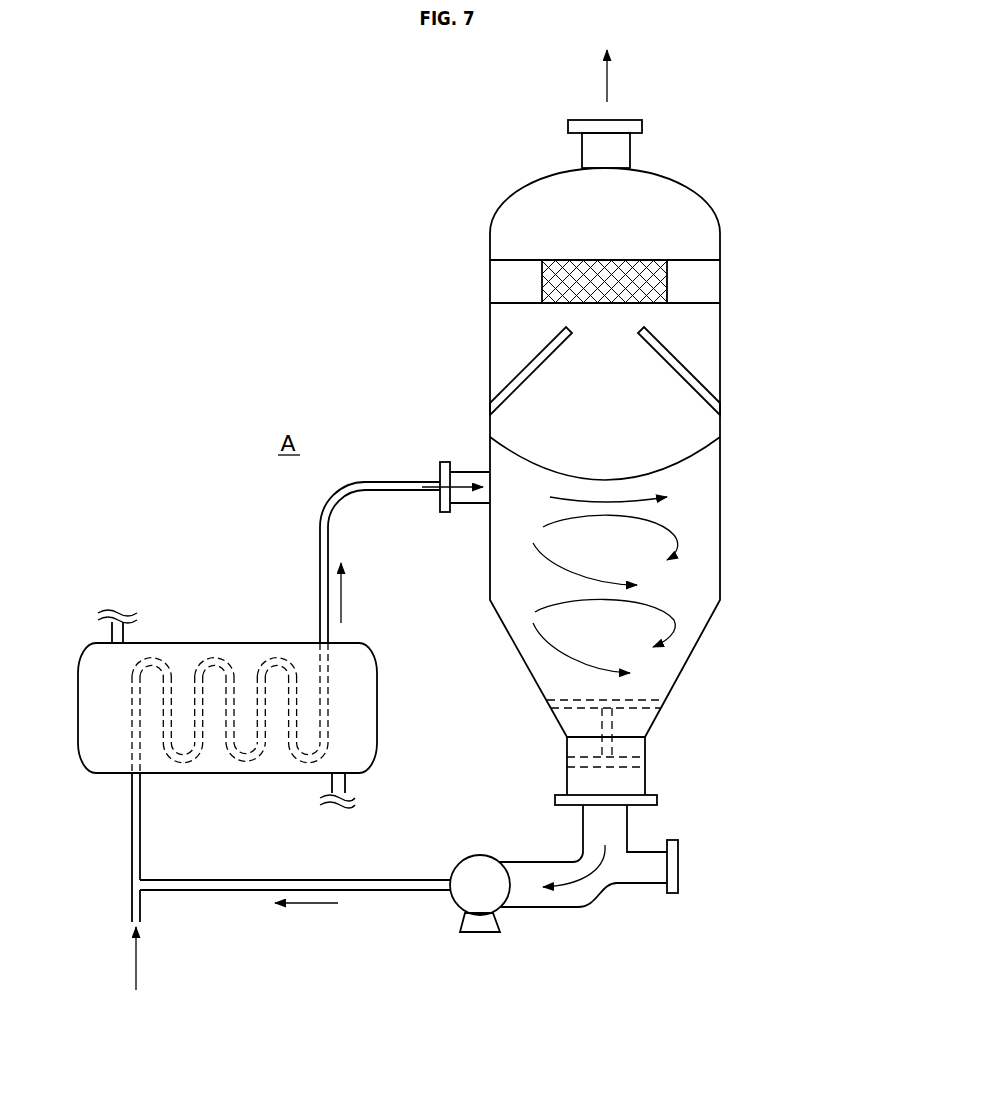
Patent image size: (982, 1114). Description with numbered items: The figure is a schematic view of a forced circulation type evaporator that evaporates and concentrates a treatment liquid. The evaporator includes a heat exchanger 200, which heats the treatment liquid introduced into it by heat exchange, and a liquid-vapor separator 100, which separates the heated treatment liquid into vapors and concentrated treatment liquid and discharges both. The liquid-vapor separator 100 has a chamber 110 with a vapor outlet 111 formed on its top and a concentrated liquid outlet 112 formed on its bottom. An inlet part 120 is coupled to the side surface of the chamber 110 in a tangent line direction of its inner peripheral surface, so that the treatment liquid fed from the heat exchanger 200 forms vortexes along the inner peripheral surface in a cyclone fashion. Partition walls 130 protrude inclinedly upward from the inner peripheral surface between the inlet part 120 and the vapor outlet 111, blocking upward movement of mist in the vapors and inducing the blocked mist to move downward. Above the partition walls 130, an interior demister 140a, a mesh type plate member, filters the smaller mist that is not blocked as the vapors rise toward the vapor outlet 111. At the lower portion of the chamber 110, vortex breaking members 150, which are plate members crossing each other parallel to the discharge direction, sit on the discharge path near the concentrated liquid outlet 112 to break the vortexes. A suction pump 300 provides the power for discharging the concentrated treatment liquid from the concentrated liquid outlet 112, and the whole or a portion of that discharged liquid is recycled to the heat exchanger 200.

The liquid-vapor separator 100 is at (742, 333).
The chamber 110 is at (707, 202).
The vapor outlet 111 is at (623, 120).
The concentrated liquid outlet 112 is at (657, 803).
The inlet part 120 is at (445, 462).
The partition walls 130 is at (527, 360).
The interior demister 140a is at (567, 260).
The vortex breaking members 150 is at (638, 697).
The heat exchanger 200 is at (218, 628).
The suction pump 300 is at (460, 895).